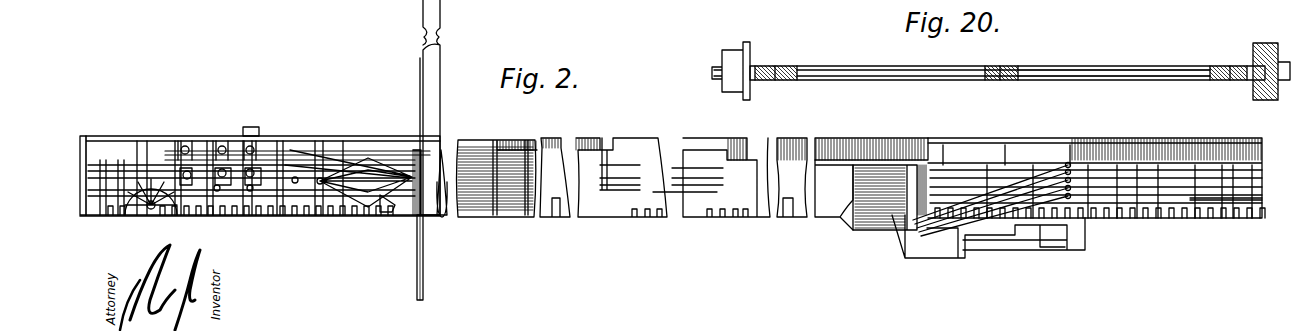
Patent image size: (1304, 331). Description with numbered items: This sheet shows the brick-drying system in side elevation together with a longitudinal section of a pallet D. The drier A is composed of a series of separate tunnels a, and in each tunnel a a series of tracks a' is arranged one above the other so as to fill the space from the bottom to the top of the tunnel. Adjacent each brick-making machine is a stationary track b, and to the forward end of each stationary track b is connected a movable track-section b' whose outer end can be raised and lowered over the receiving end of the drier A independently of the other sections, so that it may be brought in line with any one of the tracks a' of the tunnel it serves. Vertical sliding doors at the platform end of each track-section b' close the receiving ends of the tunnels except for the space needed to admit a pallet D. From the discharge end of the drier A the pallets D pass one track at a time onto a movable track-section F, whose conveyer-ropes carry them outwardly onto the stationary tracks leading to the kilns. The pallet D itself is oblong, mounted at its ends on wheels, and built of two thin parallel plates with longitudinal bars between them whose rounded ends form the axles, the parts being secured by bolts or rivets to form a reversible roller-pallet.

In FIG. 2, the drier A is at (672, 168).
In FIG. 2, the tunnel a is at (660, 197).
In FIG. 2, the track a' is at (678, 204).
In FIG. 2, the stationary track b is at (348, 199).
In FIG. 2, the movable track-section b' is at (381, 223).
In FIG. 2, the movable track-section F is at (1036, 180).
In FIG. 2, the rail s is at (1225, 200).
In FIG. 20, the pallet D is at (1007, 60).